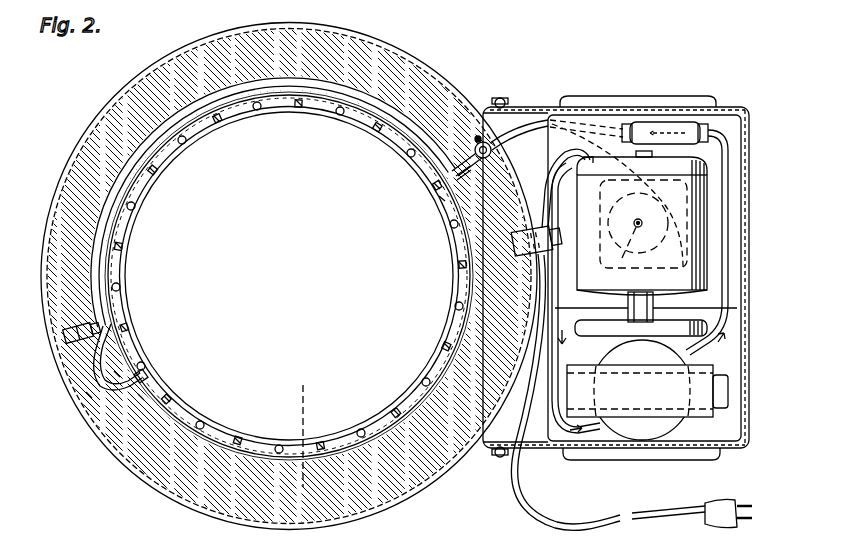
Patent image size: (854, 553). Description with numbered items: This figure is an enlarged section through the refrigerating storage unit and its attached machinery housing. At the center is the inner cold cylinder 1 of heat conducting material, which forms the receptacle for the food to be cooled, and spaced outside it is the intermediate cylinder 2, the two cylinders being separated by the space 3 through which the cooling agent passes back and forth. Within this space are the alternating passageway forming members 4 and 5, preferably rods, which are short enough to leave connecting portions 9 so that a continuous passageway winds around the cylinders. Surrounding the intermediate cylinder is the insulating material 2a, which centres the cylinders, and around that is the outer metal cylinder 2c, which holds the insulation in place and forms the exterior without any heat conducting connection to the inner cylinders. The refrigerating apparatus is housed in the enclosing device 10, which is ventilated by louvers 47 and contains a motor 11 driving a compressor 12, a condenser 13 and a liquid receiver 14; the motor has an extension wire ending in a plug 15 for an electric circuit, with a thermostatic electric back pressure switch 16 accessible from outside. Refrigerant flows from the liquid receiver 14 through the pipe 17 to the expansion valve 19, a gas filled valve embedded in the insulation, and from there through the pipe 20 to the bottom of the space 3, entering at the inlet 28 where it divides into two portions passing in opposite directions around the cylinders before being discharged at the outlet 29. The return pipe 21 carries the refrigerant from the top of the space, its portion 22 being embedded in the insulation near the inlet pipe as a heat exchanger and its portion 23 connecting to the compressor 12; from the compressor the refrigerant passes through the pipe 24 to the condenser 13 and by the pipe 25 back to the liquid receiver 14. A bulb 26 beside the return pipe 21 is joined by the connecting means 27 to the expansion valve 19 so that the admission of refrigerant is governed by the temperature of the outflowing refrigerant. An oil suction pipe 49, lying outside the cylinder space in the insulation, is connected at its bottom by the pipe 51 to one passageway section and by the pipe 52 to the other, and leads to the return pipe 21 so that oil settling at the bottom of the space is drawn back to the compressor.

The inner cold cylinder 1 is at (163, 173).
The intermediate cylinder 2 is at (147, 198).
The insulating material 2a is at (130, 106).
The outer metal cylinder 2c is at (80, 146).
The space 3 is at (175, 160).
The passageway forming members 4 is at (124, 247).
The passageway forming members 5 is at (121, 287).
The connecting portions 9 is at (296, 401).
The enclosing device 10 is at (733, 107).
The motor 11 is at (705, 195).
The compressor 12 is at (700, 248).
The condenser 13 is at (710, 392).
The liquid receiver 14 is at (652, 433).
The plug 15 is at (725, 501).
The thermostatic electric back pressure switch 16 is at (554, 236).
The pipe 17 is at (530, 138).
The expansion valve 19 is at (490, 162).
The pipe 20 is at (455, 173).
The return pipe 21 is at (83, 373).
The portion 22 is at (477, 136).
The portion 23 is at (520, 130).
The pipe 24 is at (558, 353).
The pipe 25 is at (558, 436).
The bulb 26 is at (74, 328).
The connecting means 27 is at (300, 78).
The inlet 28 is at (438, 196).
The outlet 29 is at (127, 388).
The louvers 47 is at (662, 96).
The oil suction pipe 49 is at (85, 393).
The pipe 51 is at (115, 372).
The pipe 52 is at (140, 397).